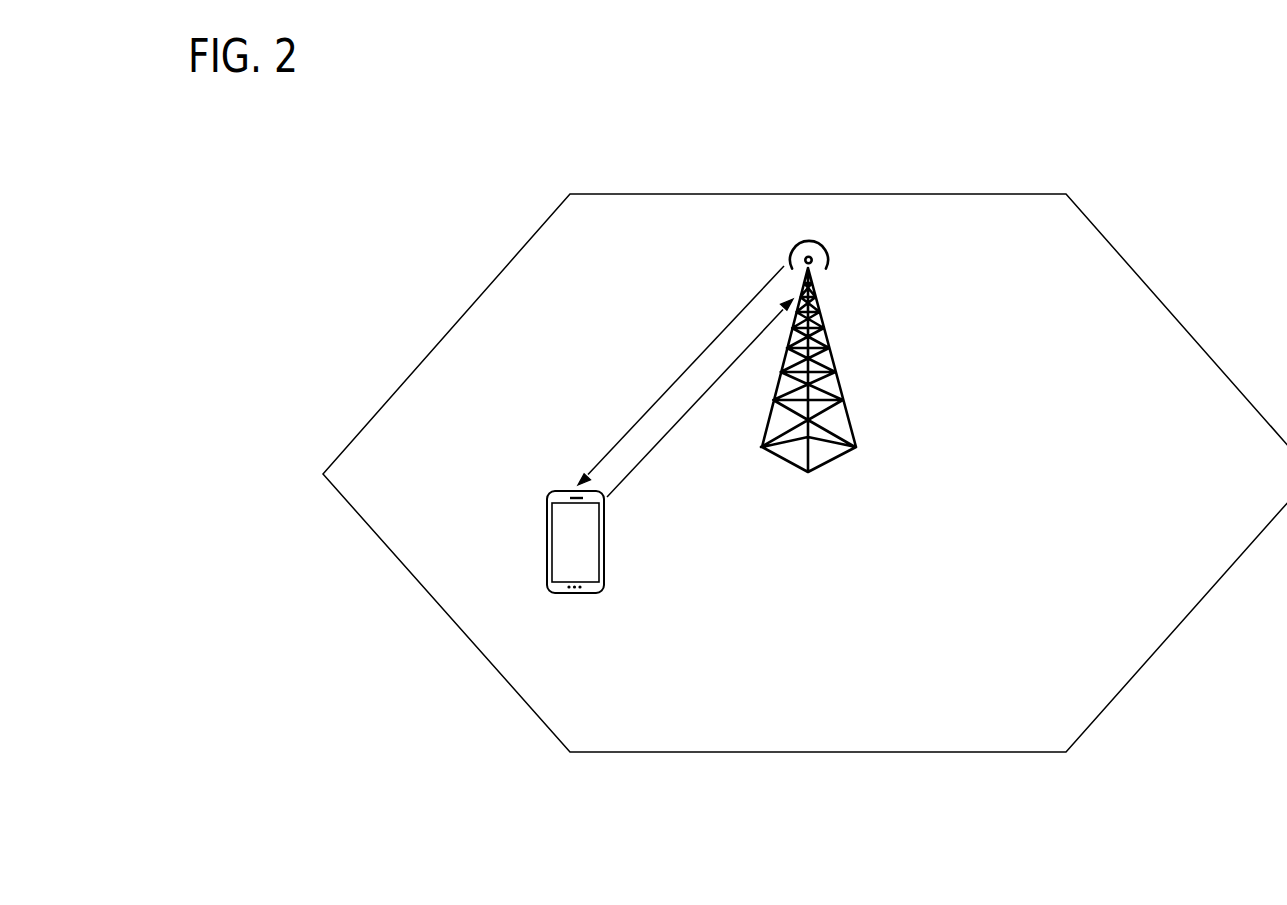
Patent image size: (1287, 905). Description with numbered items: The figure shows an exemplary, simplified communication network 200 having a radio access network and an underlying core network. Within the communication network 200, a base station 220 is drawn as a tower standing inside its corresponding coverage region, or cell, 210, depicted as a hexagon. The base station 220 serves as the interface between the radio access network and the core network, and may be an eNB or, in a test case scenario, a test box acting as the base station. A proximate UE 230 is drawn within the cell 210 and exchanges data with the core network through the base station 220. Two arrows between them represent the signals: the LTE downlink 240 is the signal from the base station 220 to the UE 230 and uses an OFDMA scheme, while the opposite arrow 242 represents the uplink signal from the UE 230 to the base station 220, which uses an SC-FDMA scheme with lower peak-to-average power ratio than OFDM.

The communication network 200 is at (238, 170).
The coverage region 210 is at (805, 462).
The base station 220 is at (808, 375).
The UE 230 is at (575, 559).
The LTE downlink 240 is at (681, 375).
The uplink transmission 242 is at (700, 398).